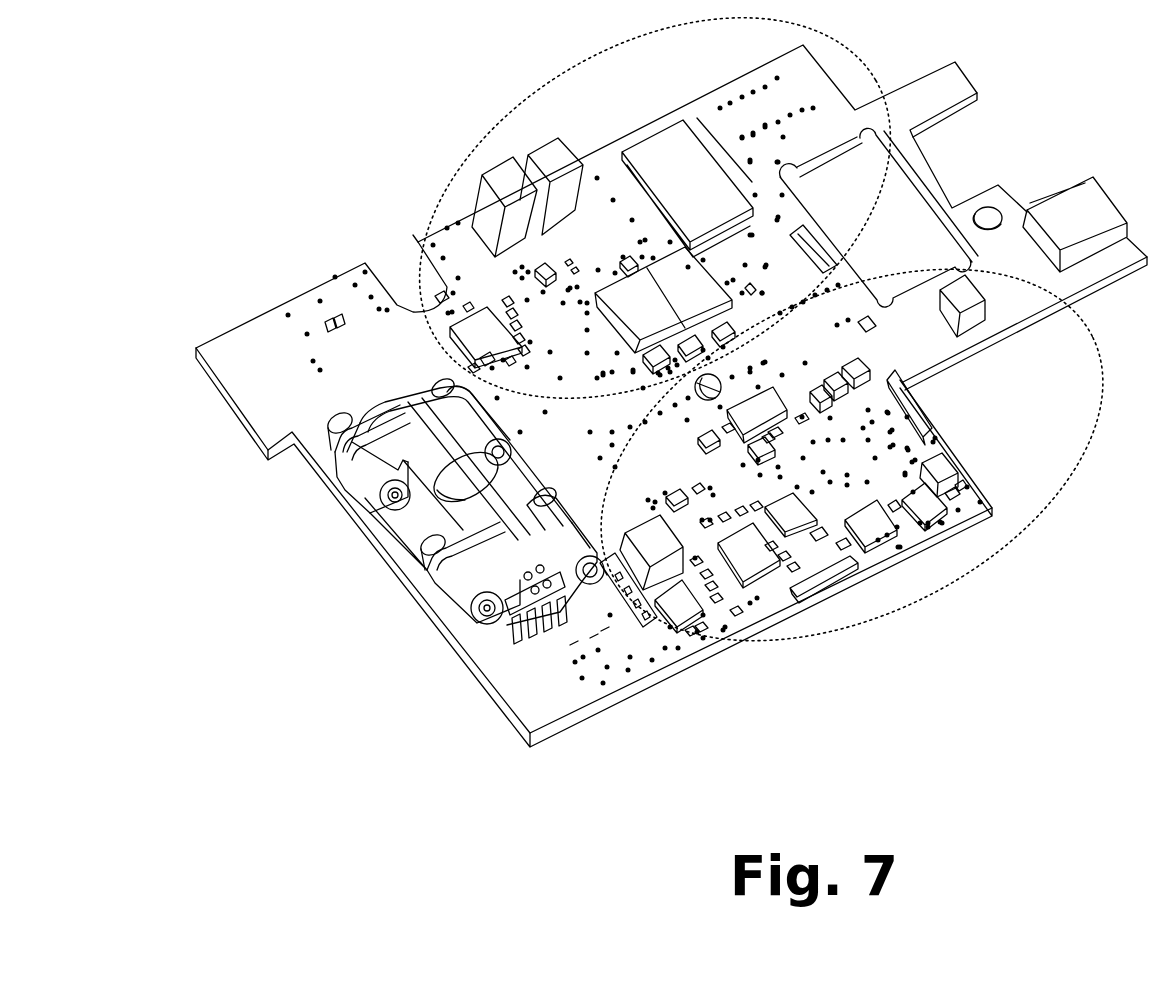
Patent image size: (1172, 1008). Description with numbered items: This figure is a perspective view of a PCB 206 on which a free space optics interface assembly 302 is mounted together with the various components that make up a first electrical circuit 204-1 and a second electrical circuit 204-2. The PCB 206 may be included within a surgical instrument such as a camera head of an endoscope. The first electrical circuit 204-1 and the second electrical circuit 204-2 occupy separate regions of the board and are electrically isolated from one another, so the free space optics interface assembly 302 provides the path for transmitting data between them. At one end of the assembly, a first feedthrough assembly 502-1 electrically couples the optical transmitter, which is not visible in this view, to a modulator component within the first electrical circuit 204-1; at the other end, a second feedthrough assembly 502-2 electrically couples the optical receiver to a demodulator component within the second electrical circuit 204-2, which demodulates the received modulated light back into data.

The PCB 206 is at (235, 347).
The first electrical circuit 204-1 is at (1056, 453).
The second electrical circuit 204-2 is at (510, 105).
The free space optics interface assembly 302 is at (512, 488).
The first feedthrough assembly 502-1 is at (495, 623).
The second feedthrough assembly 502-2 is at (340, 478).